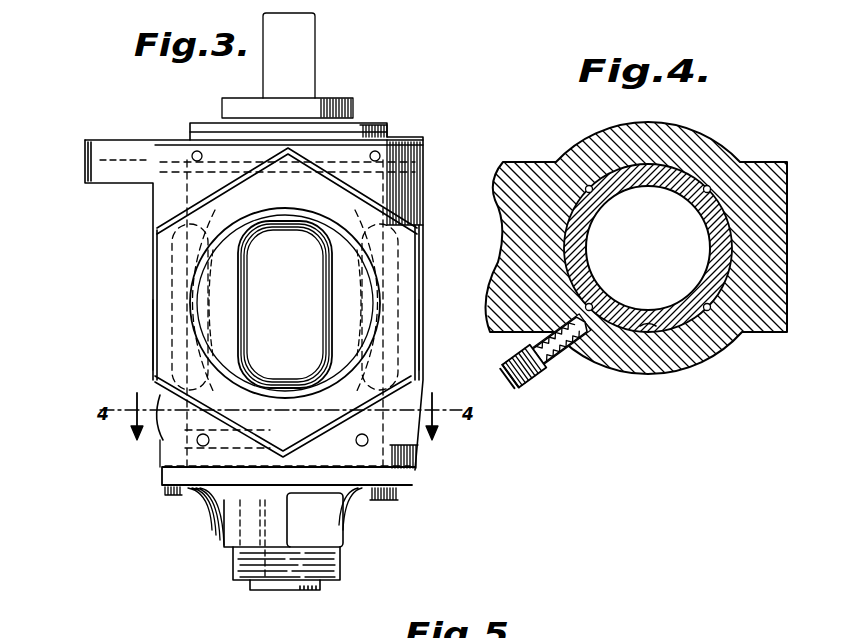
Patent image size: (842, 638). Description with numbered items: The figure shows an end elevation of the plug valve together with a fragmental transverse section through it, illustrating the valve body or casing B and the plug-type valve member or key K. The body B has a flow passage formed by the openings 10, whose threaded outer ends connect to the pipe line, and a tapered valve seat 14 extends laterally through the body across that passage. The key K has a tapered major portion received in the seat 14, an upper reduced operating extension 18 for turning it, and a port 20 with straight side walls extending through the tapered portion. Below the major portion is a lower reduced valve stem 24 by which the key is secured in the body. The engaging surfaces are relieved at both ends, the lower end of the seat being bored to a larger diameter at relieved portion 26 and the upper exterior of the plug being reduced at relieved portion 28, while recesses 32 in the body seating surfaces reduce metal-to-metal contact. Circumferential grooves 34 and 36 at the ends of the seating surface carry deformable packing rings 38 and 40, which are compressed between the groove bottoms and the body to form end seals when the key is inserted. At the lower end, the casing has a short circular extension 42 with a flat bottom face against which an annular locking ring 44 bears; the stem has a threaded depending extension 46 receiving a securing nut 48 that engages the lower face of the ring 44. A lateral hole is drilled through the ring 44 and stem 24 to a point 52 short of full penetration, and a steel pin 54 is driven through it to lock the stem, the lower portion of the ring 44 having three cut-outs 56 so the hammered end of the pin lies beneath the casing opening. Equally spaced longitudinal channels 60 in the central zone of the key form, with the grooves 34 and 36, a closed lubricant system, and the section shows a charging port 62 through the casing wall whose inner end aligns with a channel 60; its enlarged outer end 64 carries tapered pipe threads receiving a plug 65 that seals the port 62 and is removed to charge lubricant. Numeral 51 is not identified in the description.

In FIG. 3, the openings 10 is at (203, 290).
In FIG. 4, the tapered valve seat 14 is at (734, 228).
In FIG. 3, the reduced operating extension 18 is at (302, 48).
In FIG. 3, the port 20 is at (332, 328).
In FIG. 3, the valve stem 24 is at (328, 524).
In FIG. 3, the relieved portion 26 is at (168, 482).
In FIG. 3, the relieved portion 28 is at (193, 152).
In FIG. 3, the recesses 32 is at (160, 350).
In FIG. 3, the upper circumferential groove 34 is at (156, 203).
In FIG. 3, the lower circumferential groove 36 is at (410, 448).
In FIG. 3, the packing ring 38 is at (186, 150).
In FIG. 3, the packing ring 40 is at (196, 438).
In FIG. 3, the circular extension 42 is at (176, 492).
In FIG. 3, the locking ring 44 is at (208, 505).
In FIG. 3, the depending extension 46 is at (238, 562).
In FIG. 3, the securing nut 48 is at (330, 566).
In FIG. 3, the passage 51 is at (246, 540).
In FIG. 3, the point 52 is at (357, 508).
In FIG. 3, the steel pin 54 is at (222, 512).
In FIG. 3, the cut-outs 56 is at (396, 496).
In FIG. 4, the longitudinal channels 60 is at (589, 185).
In FIG. 4, the charging port 62 is at (598, 358).
In FIG. 4, the outer end of charging port 64 is at (534, 373).
In FIG. 4, the plug 65 is at (522, 367).
In FIG. 3, the valve body B is at (425, 148).
In FIG. 4, the valve body B is at (721, 150).
In FIG. 3, the valve member K is at (328, 94).
In FIG. 4, the valve member K is at (648, 318).